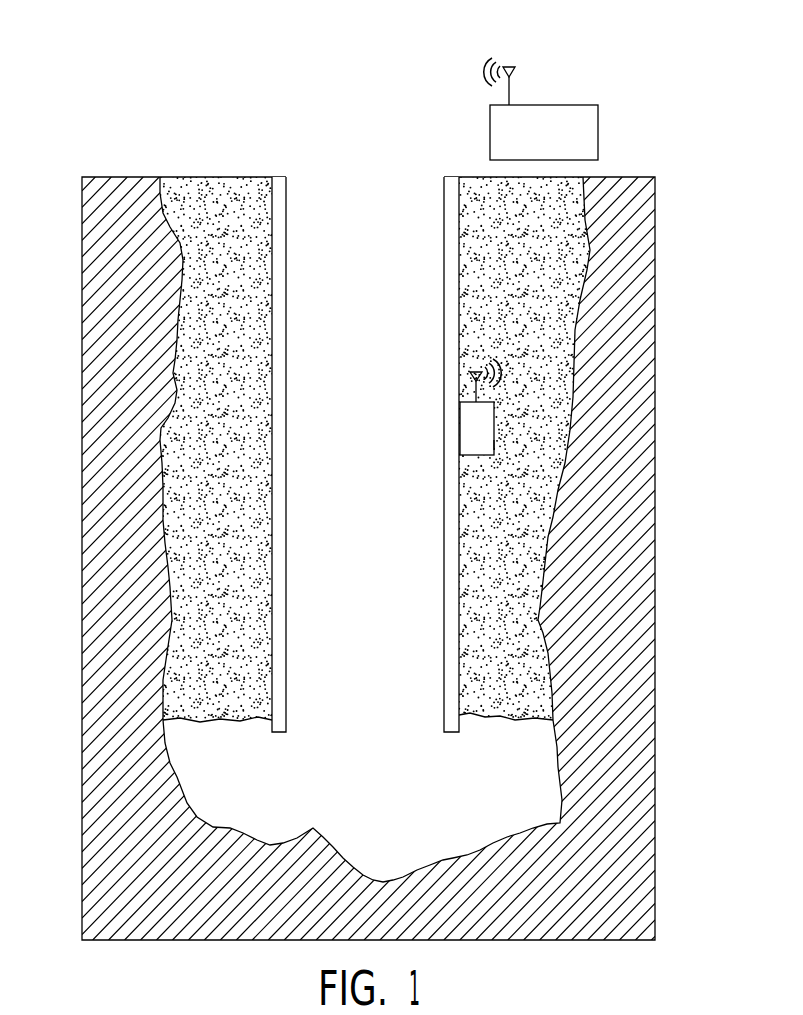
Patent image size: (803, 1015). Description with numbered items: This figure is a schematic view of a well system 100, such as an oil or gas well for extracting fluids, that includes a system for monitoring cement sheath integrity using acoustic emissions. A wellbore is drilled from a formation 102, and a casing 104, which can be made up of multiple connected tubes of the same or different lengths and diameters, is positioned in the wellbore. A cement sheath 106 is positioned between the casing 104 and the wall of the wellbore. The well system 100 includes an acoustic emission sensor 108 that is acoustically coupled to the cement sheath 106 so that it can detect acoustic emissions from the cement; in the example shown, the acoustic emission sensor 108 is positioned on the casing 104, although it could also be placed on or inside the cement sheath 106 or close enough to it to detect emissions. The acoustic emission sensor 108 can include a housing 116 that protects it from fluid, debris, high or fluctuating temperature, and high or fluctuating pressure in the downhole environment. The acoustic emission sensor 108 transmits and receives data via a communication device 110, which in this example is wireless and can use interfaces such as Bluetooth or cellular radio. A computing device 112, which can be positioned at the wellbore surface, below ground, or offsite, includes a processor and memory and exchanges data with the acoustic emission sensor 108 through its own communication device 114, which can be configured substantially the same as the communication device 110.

The well system 100 is at (217, 110).
The formation 102 is at (622, 229).
The casing 104 is at (453, 677).
The cement sheath 106 is at (190, 577).
The acoustic emission sensor 108 is at (480, 437).
The communication device 110 is at (510, 371).
The computing device 112 is at (598, 131).
The communication device 114 is at (522, 73).
The housing 116 is at (494, 447).